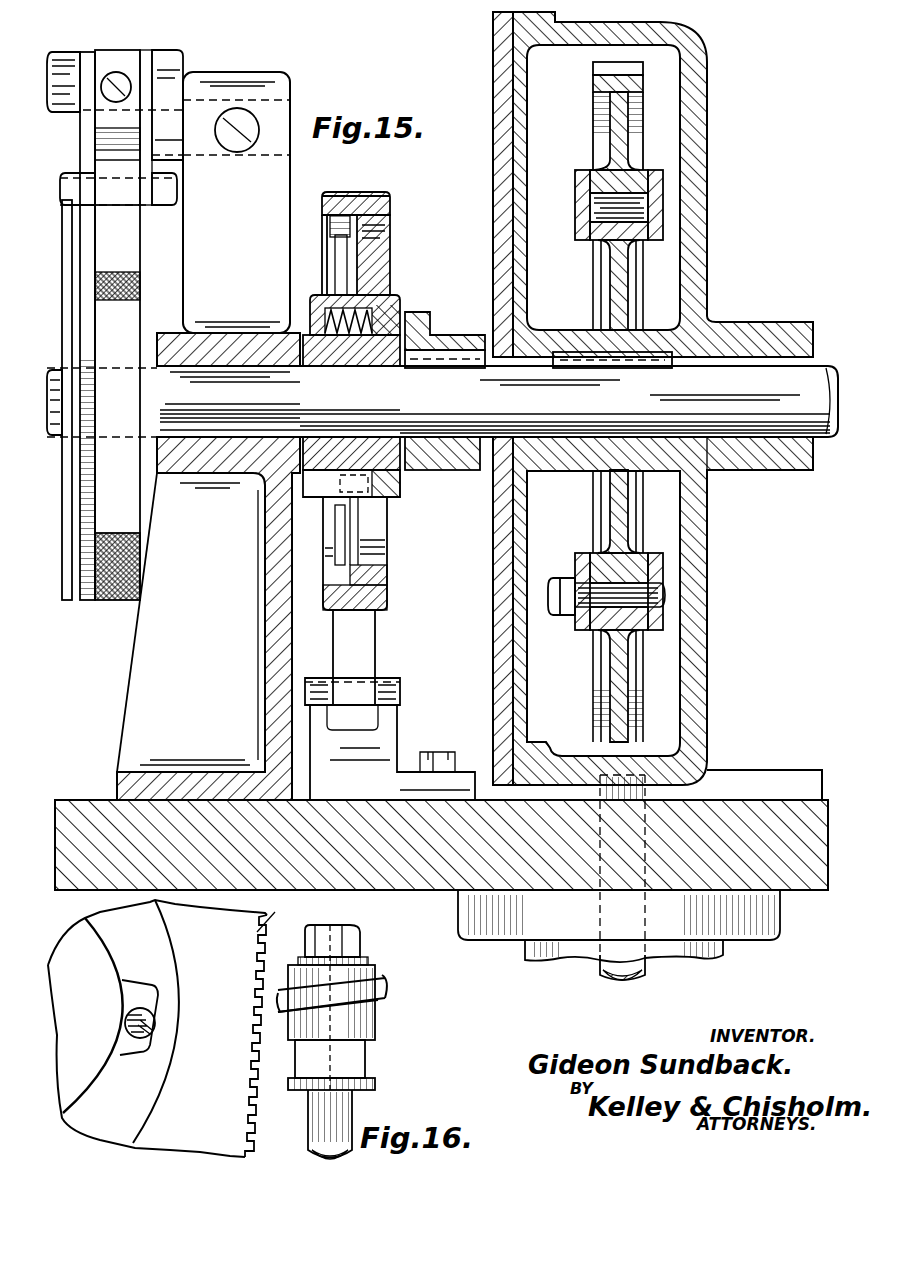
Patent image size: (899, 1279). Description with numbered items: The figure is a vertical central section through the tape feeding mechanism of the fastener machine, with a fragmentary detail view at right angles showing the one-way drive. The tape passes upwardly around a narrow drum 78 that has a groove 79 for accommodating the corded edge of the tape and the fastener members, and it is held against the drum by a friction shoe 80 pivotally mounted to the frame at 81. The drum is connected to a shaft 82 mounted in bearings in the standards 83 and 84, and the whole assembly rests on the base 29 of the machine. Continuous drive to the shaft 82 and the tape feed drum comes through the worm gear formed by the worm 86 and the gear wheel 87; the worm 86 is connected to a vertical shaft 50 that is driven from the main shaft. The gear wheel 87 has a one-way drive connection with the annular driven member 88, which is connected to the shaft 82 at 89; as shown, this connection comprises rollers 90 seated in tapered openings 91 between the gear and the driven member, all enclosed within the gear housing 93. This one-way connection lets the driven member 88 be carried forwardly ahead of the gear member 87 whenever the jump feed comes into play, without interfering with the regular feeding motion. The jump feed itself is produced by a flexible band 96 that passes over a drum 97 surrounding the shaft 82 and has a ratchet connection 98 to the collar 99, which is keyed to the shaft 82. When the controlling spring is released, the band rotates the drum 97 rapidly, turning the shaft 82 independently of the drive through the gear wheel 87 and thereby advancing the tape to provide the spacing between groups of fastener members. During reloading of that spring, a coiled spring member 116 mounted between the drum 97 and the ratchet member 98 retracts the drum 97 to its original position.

In FIG. 15, the base plate 29 is at (75, 800).
In FIG. 15, the vertical shaft 50 is at (605, 970).
In FIG. 16, the vertical shaft 50 is at (312, 1120).
In FIG. 15, the narrow drum 78 is at (112, 600).
In FIG. 15, the groove 79 is at (85, 600).
In FIG. 15, the friction shoe 80 is at (128, 242).
In FIG. 15, the pivot 81 is at (152, 80).
In FIG. 15, the shaft 82 is at (762, 382).
In FIG. 15, the standard 83 is at (236, 202).
In FIG. 15, the standard 84 is at (782, 455).
In FIG. 16, the worm 86 is at (378, 1002).
In FIG. 15, the worm gear wheel 87 is at (598, 133).
In FIG. 16, the worm gear wheel 87 is at (282, 912).
In FIG. 15, the annular driven member 88 is at (618, 273).
In FIG. 16, the annular driven member 88 is at (68, 945).
In FIG. 15, the connection 89 is at (650, 365).
In FIG. 15, the rollers 90 is at (586, 203).
In FIG. 16, the rollers 90 is at (150, 1052).
In FIG. 16, the tapered openings 91 is at (150, 1005).
In FIG. 15, the gear housing 93 is at (705, 68).
In FIG. 15, the flexible band 96 is at (350, 192).
In FIG. 15, the drum 97 is at (392, 203).
In FIG. 15, the ratchet member 98 is at (400, 482).
In FIG. 15, the collar 99 is at (437, 475).
In FIG. 15, the coiled spring member 116 is at (358, 275).